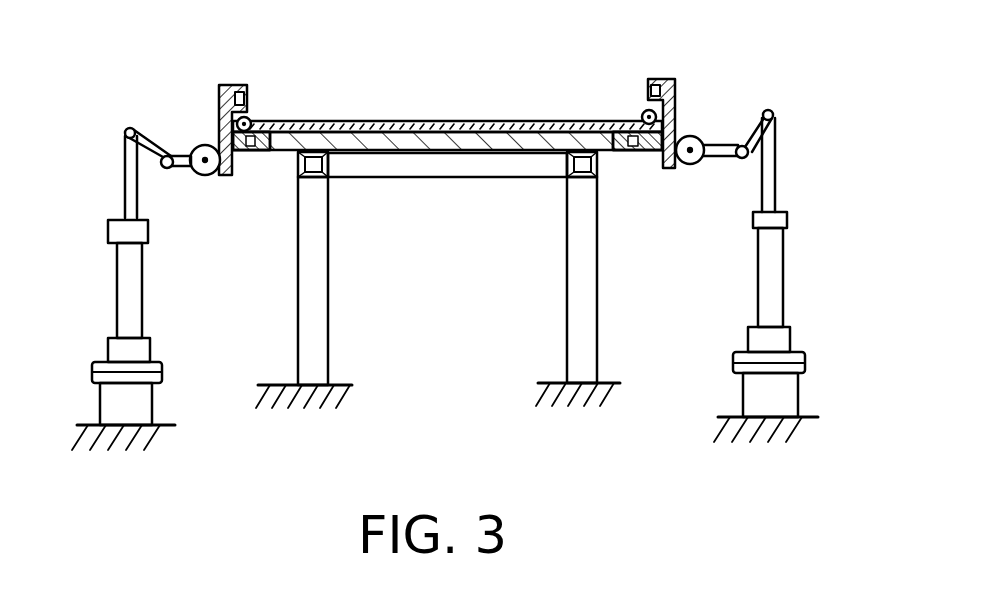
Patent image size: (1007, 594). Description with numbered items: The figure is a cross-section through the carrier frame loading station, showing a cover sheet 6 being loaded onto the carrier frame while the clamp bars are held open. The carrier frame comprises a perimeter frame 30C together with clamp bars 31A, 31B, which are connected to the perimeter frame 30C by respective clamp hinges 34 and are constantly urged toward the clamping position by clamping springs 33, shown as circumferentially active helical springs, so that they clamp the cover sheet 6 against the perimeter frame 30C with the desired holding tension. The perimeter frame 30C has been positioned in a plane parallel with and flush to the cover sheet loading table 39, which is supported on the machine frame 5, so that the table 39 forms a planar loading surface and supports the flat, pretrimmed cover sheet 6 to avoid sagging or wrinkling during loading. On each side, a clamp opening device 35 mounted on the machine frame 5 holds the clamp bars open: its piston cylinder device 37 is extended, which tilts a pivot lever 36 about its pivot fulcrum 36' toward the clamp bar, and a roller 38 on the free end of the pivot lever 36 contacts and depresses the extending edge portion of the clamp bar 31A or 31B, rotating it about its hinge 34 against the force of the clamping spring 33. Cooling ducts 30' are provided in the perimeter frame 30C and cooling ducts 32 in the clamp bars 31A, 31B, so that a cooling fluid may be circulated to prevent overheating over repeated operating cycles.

The machine frame 5 is at (345, 384).
The cover sheet 6 is at (401, 121).
The perimeter frame 30C is at (244, 151).
The cooling ducts 30' is at (650, 181).
The clamp bar 31A is at (226, 84).
The clamp bar 31B is at (668, 79).
The cooling ducts 32 is at (650, 84).
The clamping springs 33 is at (251, 116).
The clamp hinges 34 is at (258, 130).
The clamp opening devices 35 is at (806, 154).
The pivot levers 36 is at (754, 98).
The pivot fulcrums 36' is at (723, 110).
The piston cylinder devices 37 is at (787, 218).
The roller 38 is at (205, 176).
The cover sheet loading table 39 is at (355, 164).